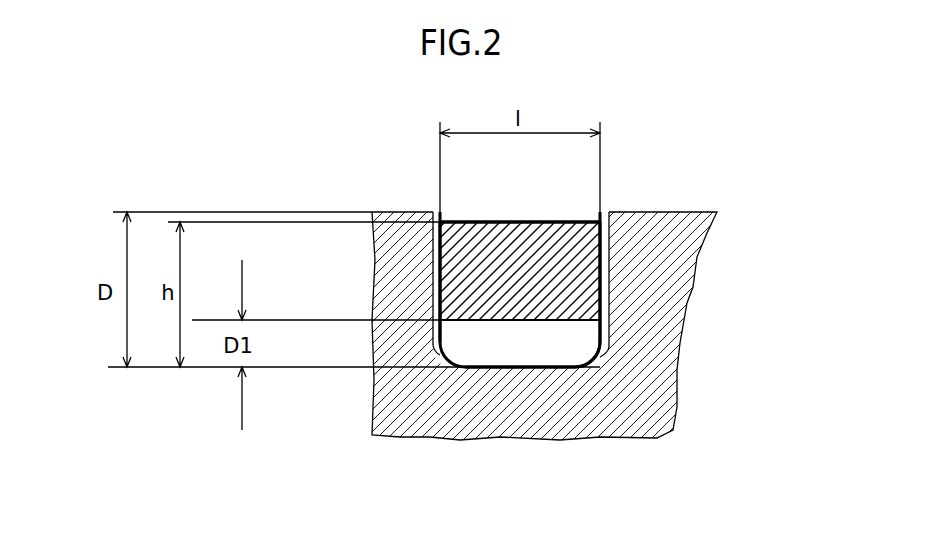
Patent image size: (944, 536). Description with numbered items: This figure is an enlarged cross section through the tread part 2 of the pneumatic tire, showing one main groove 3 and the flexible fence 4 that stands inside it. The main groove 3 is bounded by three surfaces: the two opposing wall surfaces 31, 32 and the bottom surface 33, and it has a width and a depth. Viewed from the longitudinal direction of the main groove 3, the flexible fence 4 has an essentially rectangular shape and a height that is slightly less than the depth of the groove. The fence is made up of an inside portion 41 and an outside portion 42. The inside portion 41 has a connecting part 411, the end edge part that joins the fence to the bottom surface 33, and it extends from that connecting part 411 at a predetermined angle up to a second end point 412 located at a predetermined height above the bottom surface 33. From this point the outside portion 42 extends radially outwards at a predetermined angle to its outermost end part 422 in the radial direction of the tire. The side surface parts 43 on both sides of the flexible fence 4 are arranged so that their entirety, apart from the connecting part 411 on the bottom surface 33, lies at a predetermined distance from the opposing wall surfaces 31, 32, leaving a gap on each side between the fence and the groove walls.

The tread part 2 is at (397, 285).
The main groove 3 is at (477, 220).
The flexible fence 4 is at (563, 242).
The wall surface 31 is at (430, 330).
The wall surface 32 is at (612, 322).
The bottom surface 33 is at (543, 366).
The inside portion 41 is at (506, 351).
The outside portion 42 is at (506, 283).
The side surface part 43 is at (440, 243).
The connecting part 411 is at (513, 370).
The second end point 412 is at (570, 320).
The outermost end part 422 is at (517, 221).